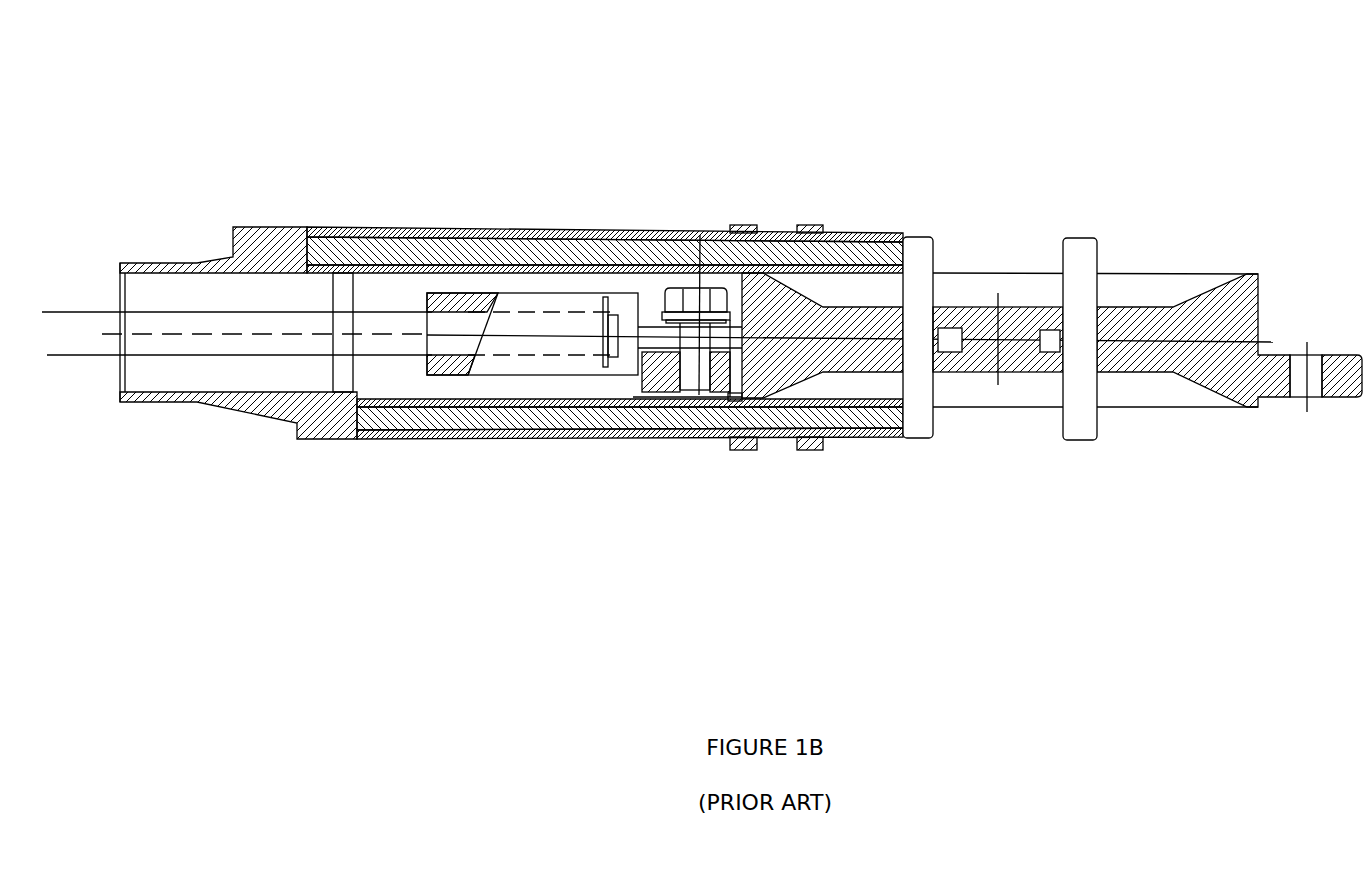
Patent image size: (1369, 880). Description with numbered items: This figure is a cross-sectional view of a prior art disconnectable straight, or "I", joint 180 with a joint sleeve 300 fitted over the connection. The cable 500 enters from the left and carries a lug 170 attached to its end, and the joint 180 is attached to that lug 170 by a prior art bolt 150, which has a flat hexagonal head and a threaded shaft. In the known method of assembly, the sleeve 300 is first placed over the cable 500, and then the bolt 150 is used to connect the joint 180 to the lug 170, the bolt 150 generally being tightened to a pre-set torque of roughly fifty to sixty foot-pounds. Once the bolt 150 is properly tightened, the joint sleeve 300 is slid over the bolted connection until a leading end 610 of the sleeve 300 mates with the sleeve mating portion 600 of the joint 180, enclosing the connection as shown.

The cable 500 is at (90, 340).
The lug 170 is at (655, 342).
The bolt 150 is at (680, 282).
The sleeve 300 is at (700, 235).
The leading end 610 is at (917, 290).
The sleeve mating portion 600 is at (933, 268).
The joint 180 is at (1037, 342).